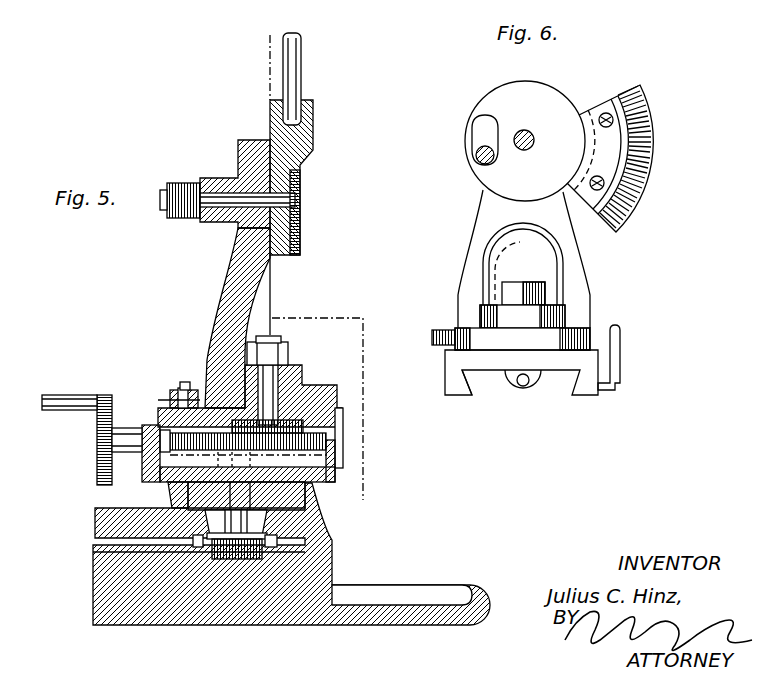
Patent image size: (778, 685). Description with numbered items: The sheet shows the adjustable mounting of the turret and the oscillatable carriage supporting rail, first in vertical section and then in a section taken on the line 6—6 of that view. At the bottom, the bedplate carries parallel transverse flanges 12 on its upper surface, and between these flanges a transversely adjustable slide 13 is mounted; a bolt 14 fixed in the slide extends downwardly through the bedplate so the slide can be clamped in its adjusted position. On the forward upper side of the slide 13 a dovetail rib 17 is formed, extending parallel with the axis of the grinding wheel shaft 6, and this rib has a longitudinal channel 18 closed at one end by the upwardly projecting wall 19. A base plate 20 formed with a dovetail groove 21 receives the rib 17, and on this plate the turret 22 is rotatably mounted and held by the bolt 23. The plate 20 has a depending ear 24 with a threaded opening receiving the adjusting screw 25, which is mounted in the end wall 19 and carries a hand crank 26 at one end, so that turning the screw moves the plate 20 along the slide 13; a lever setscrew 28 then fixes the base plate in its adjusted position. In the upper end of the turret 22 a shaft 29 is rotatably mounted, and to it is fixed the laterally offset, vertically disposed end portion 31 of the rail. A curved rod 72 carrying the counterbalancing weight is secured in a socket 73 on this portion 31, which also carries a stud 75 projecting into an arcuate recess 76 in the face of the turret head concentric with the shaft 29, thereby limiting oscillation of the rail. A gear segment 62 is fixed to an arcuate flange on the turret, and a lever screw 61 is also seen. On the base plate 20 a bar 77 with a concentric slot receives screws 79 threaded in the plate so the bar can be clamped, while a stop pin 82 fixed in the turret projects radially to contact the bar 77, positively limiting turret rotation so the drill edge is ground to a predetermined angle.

In FIG. 5, the shaft 6 is at (320, 263).
In FIG. 5, the flanges 12 is at (170, 493).
In FIG. 5, the slide 13 is at (335, 478).
In FIG. 5, the bolt 14 is at (240, 530).
In FIG. 5, the dovetail rib 17 is at (330, 480).
In FIG. 5, the longitudinal channel 18 is at (340, 455).
In FIG. 5, the end wall 19 is at (157, 425).
In FIG. 6, the base plate 20 is at (592, 360).
In FIG. 6, the dovetail groove 21 is at (470, 378).
In FIG. 5, the turret 22 is at (228, 278).
In FIG. 6, the turret 22 is at (577, 270).
In FIG. 5, the bolt 23 is at (268, 385).
In FIG. 6, the bolt 23 is at (527, 280).
In FIG. 6, the depending ear 24 is at (527, 392).
In FIG. 5, the adjusting screw 25 is at (340, 403).
In FIG. 5, the hand crank 26 is at (100, 413).
In FIG. 6, the lever setscrew 28 is at (622, 385).
In FIG. 5, the shaft 29 is at (222, 180).
In FIG. 6, the shaft 29 is at (526, 130).
In FIG. 5, the end portion of rail 31 is at (300, 248).
In FIG. 6, the lever screw 61 is at (607, 93).
In FIG. 6, the gear segment 62 is at (655, 133).
In FIG. 5, the curved rod 72 is at (301, 60).
In FIG. 5, the socket 73 is at (312, 115).
In FIG. 6, the stud 75 is at (476, 165).
In FIG. 6, the arcuate recess 76 is at (478, 125).
In FIG. 5, the bar 77 is at (170, 398).
In FIG. 5, the screws 79 is at (190, 385).
In FIG. 6, the stop pin 82 is at (443, 330).